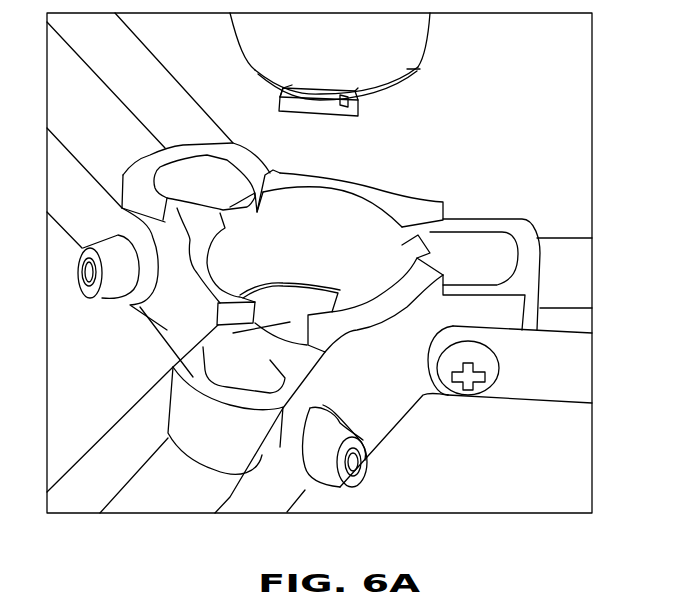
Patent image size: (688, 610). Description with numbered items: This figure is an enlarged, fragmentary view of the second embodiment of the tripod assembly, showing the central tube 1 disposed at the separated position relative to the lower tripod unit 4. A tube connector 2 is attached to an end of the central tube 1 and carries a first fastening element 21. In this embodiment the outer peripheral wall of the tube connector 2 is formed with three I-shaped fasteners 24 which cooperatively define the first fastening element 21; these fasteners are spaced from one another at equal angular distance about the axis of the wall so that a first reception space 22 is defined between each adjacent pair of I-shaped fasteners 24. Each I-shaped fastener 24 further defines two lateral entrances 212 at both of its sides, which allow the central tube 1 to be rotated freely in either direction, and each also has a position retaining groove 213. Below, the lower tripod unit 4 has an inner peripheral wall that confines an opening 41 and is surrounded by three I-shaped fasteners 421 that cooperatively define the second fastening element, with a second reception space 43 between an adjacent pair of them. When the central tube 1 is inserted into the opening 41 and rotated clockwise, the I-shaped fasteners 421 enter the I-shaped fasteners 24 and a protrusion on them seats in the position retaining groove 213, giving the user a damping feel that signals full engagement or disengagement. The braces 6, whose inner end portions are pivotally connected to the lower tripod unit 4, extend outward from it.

The central tube 1 is at (400, 37).
The tube connector 2 is at (418, 70).
The first fastening element 21 is at (270, 94).
The lateral entrances 212 is at (292, 85).
The position retaining groove 213 is at (343, 96).
The first reception space 22 is at (387, 93).
The I-shaped fasteners 24 is at (332, 118).
The lower tripod unit 4 is at (492, 230).
The opening 41 is at (192, 337).
The I-shaped fasteners 421 is at (355, 303).
The second reception space 43 is at (283, 292).
The braces 6 is at (550, 245).